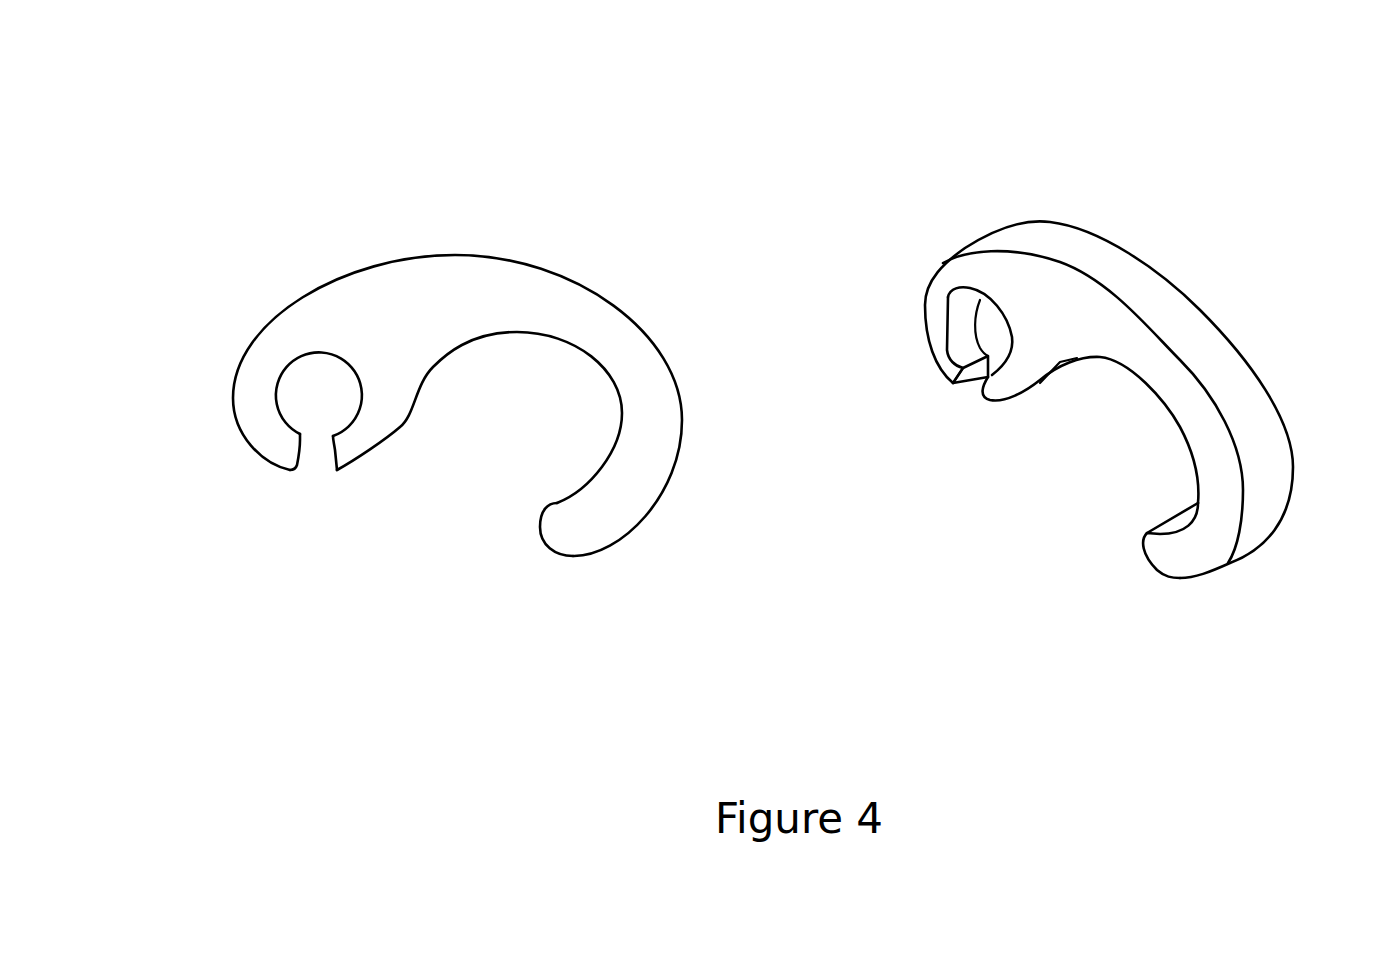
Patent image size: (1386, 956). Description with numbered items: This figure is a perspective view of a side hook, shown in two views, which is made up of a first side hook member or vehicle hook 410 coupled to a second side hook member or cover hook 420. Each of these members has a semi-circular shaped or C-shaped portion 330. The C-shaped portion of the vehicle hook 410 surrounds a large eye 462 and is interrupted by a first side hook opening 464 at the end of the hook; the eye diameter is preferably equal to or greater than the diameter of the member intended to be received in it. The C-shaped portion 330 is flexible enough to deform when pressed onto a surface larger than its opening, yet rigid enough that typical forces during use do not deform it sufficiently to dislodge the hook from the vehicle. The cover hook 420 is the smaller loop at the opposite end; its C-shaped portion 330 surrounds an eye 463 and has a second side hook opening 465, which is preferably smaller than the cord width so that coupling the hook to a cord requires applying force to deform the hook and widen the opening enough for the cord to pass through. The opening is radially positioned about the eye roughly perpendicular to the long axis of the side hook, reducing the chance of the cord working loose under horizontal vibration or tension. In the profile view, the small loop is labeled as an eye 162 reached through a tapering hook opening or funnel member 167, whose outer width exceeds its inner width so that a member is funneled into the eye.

The first side hook member or vehicle hook 410 is at (749, 403).
The second side hook member or cover hook 420 is at (733, 343).
The eye 462 is at (767, 411).
The first side hook opening 464 is at (850, 601).
The second side hook opening 465 is at (651, 479).
The eye 463 is at (895, 382).
The semi-circular shaped or C-shaped portion 330 is at (749, 407).
The eye 162 is at (644, 361).
The tapering hook opening or funnel member 167 is at (365, 522).